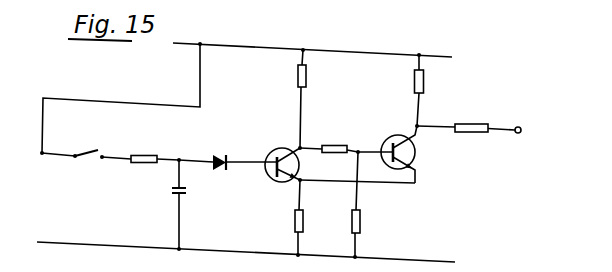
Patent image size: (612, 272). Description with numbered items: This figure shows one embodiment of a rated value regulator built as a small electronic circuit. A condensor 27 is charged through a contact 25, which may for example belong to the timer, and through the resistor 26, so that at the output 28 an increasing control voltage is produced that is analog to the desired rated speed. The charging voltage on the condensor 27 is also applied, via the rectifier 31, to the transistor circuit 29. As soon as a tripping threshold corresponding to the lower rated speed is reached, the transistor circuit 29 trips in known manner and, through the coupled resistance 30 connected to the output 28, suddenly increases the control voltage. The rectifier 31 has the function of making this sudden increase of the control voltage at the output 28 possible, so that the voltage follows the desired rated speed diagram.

The contact 25 is at (88, 161).
The resistor 26 is at (129, 151).
The condensor 27 is at (171, 192).
The output 28 is at (524, 140).
The transistor circuit 29 is at (344, 153).
The coupled resistance 30 is at (466, 137).
The rectifier 31 is at (219, 170).